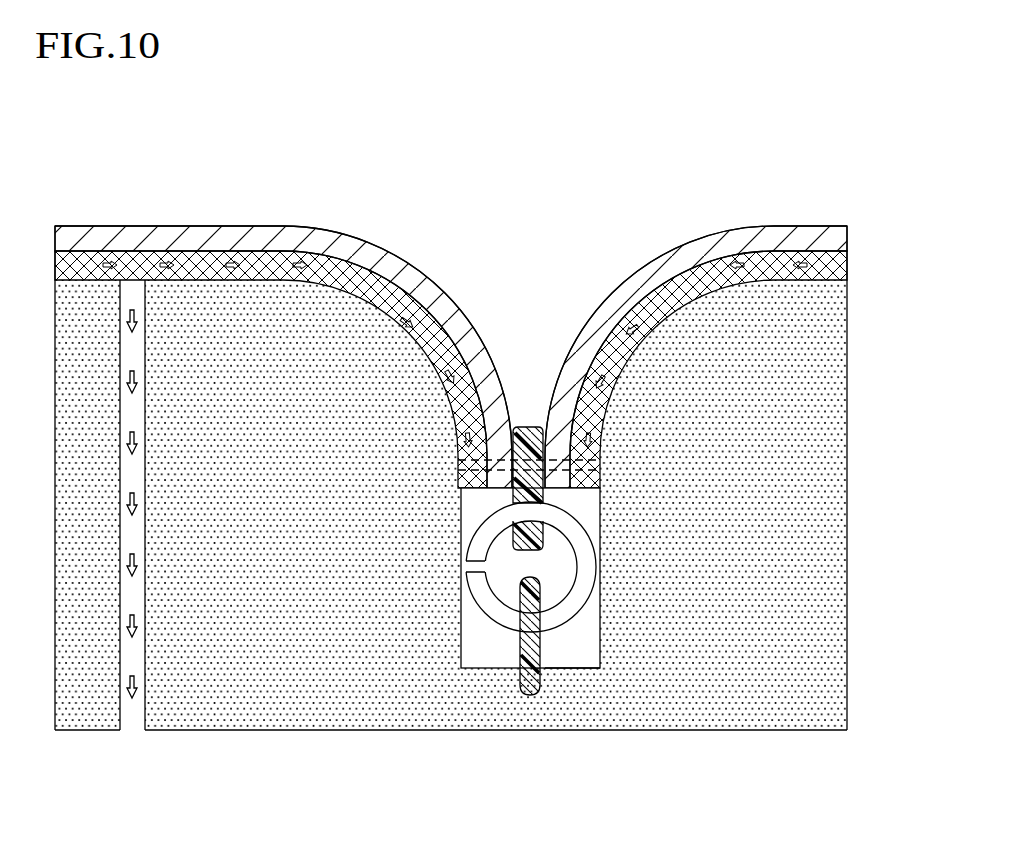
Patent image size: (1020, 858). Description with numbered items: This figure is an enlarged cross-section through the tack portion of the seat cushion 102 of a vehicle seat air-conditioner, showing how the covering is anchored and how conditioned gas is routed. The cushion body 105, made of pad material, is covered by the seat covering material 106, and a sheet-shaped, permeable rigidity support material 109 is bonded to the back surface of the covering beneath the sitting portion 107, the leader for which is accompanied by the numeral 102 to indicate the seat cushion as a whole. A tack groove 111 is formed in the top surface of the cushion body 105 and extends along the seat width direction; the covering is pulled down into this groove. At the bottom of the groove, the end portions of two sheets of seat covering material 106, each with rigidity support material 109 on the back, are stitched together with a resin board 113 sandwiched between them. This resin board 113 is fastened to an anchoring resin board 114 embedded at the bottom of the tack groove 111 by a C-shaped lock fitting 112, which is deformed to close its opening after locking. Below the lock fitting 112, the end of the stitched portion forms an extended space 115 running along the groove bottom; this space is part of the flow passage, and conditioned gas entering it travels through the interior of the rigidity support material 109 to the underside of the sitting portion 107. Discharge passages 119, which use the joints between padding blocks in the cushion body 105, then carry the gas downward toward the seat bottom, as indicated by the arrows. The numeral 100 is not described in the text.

The molded article / laminate structure 100 is at (550, 335).
The seat cushion 102 is at (451, 301).
The cushion body 105 is at (288, 675).
The seat covering material 106 is at (275, 228).
The sitting portion 107 is at (132, 224).
The rigidity support material 109 is at (204, 256).
The tack groove 111 is at (573, 668).
The lock fitting 112 is at (583, 567).
The resin board 113 is at (527, 427).
The anchoring resin board 114 is at (520, 655).
The extended space 115 is at (477, 637).
The discharge passage 119 is at (118, 705).